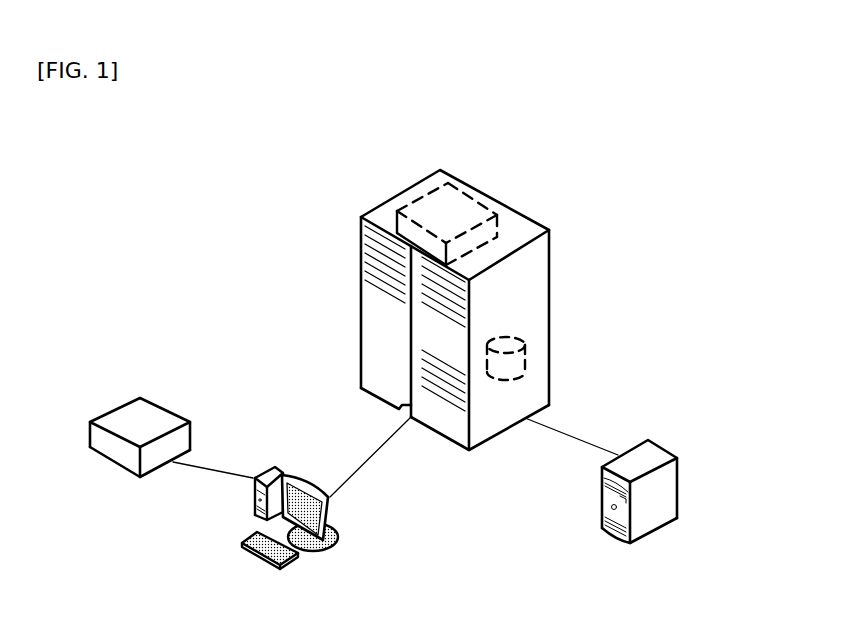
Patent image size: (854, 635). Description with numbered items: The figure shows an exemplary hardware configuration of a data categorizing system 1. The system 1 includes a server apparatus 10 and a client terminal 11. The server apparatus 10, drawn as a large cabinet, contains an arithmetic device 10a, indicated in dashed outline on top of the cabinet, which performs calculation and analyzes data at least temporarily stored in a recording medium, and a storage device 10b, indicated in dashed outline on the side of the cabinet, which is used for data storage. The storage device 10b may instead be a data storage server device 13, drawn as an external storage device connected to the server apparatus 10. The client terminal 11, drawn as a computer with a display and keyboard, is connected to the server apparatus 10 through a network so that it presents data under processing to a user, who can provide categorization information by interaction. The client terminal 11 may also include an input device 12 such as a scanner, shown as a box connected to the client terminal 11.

The data categorizing system 1 is at (648, 245).
The server apparatus 10 is at (519, 212).
The arithmetic device 10a is at (450, 213).
The storage device 10b is at (527, 353).
The client terminal 11 is at (290, 478).
The input device 12 is at (140, 416).
The data storage server device 13 is at (675, 495).